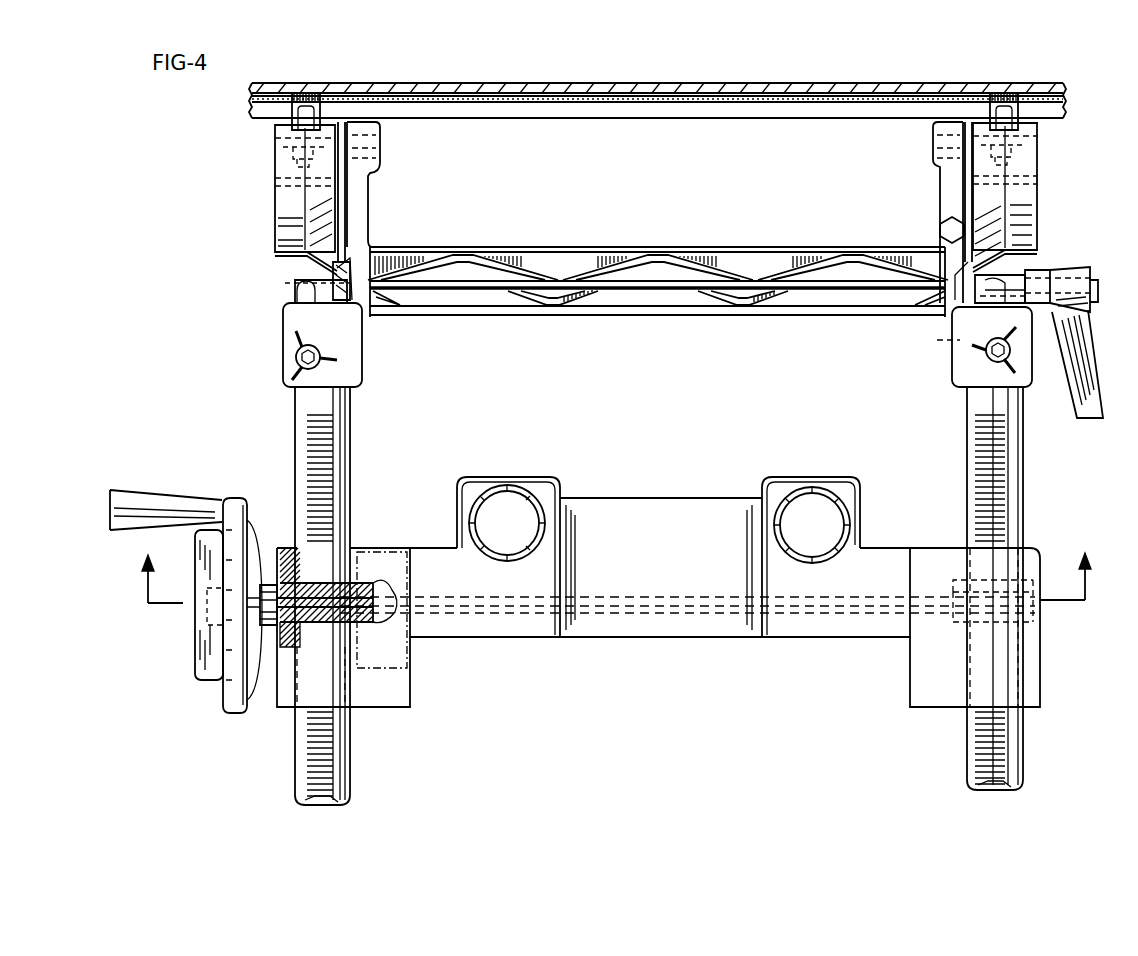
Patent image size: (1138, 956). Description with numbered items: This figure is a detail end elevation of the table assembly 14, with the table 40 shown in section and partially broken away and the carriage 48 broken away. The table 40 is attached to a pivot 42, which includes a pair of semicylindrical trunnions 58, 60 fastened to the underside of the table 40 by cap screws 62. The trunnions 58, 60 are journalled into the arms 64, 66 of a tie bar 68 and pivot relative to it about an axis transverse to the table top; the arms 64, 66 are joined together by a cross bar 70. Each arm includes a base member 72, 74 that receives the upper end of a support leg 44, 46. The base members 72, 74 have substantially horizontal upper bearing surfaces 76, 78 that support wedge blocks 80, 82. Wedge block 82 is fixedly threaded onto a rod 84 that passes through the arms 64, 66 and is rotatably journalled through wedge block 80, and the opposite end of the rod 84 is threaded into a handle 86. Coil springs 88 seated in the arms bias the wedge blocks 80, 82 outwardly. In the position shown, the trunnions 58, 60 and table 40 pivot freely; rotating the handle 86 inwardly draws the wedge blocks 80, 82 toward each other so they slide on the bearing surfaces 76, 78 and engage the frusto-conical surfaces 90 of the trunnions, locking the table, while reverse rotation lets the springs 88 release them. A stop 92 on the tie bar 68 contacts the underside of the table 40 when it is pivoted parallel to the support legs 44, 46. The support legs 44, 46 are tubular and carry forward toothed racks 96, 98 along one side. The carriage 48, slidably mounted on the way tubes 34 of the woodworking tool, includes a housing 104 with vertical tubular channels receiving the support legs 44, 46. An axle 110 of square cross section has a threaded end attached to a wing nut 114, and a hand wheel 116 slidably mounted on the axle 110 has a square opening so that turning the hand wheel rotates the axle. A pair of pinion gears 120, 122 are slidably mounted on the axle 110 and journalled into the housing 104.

The table assembly 14 is at (660, 79).
The table 40 is at (507, 84).
The pivot 42 is at (272, 196).
The support leg 44 is at (1008, 403).
The support leg 46 is at (330, 398).
The carriage 48 is at (679, 555).
The trunnion 58 is at (1022, 208).
The trunnion 60 is at (280, 257).
The cap screw 62 is at (290, 163).
The arm 64 is at (950, 193).
The arm 66 is at (362, 197).
The tie bar 68 is at (695, 278).
The cross bar 70 is at (577, 260).
The base member 72 is at (965, 375).
The base member 74 is at (362, 362).
The upper bearing surface 76 is at (1002, 288).
The upper bearing surface 78 is at (303, 281).
The wedge block 80 is at (990, 280).
The wedge block 82 is at (340, 300).
The rod 84 is at (657, 299).
The handle 86 is at (1067, 267).
The coil spring 88 is at (345, 290).
The frusto-conical surface 90 is at (313, 220).
The stop 92 is at (296, 354).
The forward toothed rack 96 is at (998, 460).
The forward toothed rack 98 is at (327, 487).
The housing 104 is at (1023, 662).
The axle 110 is at (460, 612).
The wing nut 114 is at (207, 640).
The hand wheel 116 is at (238, 505).
The pinion gear 120 is at (987, 572).
The pinion gear 122 is at (385, 580).
The way tube 34 is at (527, 493).